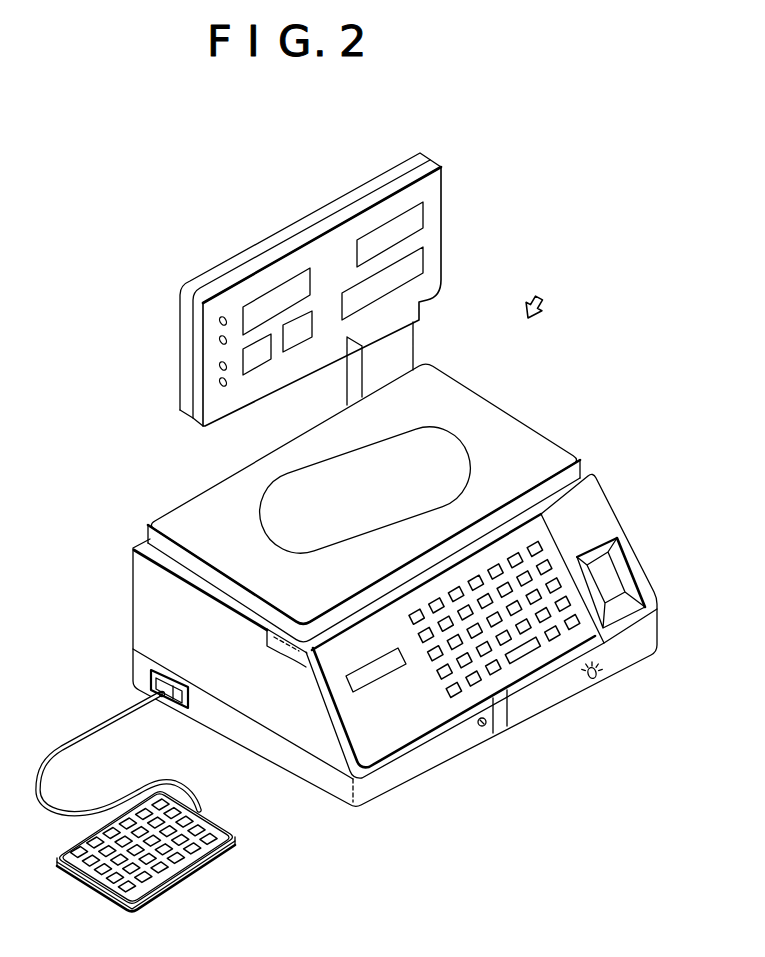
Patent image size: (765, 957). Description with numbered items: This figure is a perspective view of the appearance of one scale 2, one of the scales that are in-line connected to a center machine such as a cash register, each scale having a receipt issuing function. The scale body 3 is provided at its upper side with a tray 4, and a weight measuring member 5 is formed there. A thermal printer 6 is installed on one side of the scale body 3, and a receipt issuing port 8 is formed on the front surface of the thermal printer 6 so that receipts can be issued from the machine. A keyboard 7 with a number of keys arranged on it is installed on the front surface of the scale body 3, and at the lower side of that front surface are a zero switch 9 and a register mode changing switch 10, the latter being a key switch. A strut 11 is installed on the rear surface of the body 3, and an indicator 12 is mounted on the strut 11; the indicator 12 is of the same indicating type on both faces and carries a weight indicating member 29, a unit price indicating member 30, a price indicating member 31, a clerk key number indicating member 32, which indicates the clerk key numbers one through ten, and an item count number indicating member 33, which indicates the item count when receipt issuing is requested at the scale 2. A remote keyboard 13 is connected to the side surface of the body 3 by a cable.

The scale 2 is at (542, 289).
The scale body 3 is at (140, 587).
The tray 4 is at (192, 513).
The weight measuring member 5 is at (148, 642).
The thermal printer 6 is at (593, 512).
The keyboard 7 is at (470, 697).
The receipt issuing port 8 is at (612, 575).
The zero switch 9 is at (486, 728).
The register mode changing switch 10 is at (598, 683).
The strut 11 is at (402, 348).
The indicator 12 is at (335, 286).
The remote keyboard 13 is at (195, 855).
The weight indicating member 29 is at (267, 302).
The unit price indicating member 30 is at (385, 232).
The price indicating member 31 is at (417, 258).
The clerk key No. indicating member 32 is at (260, 360).
The item count number indicating member 33 is at (300, 337).